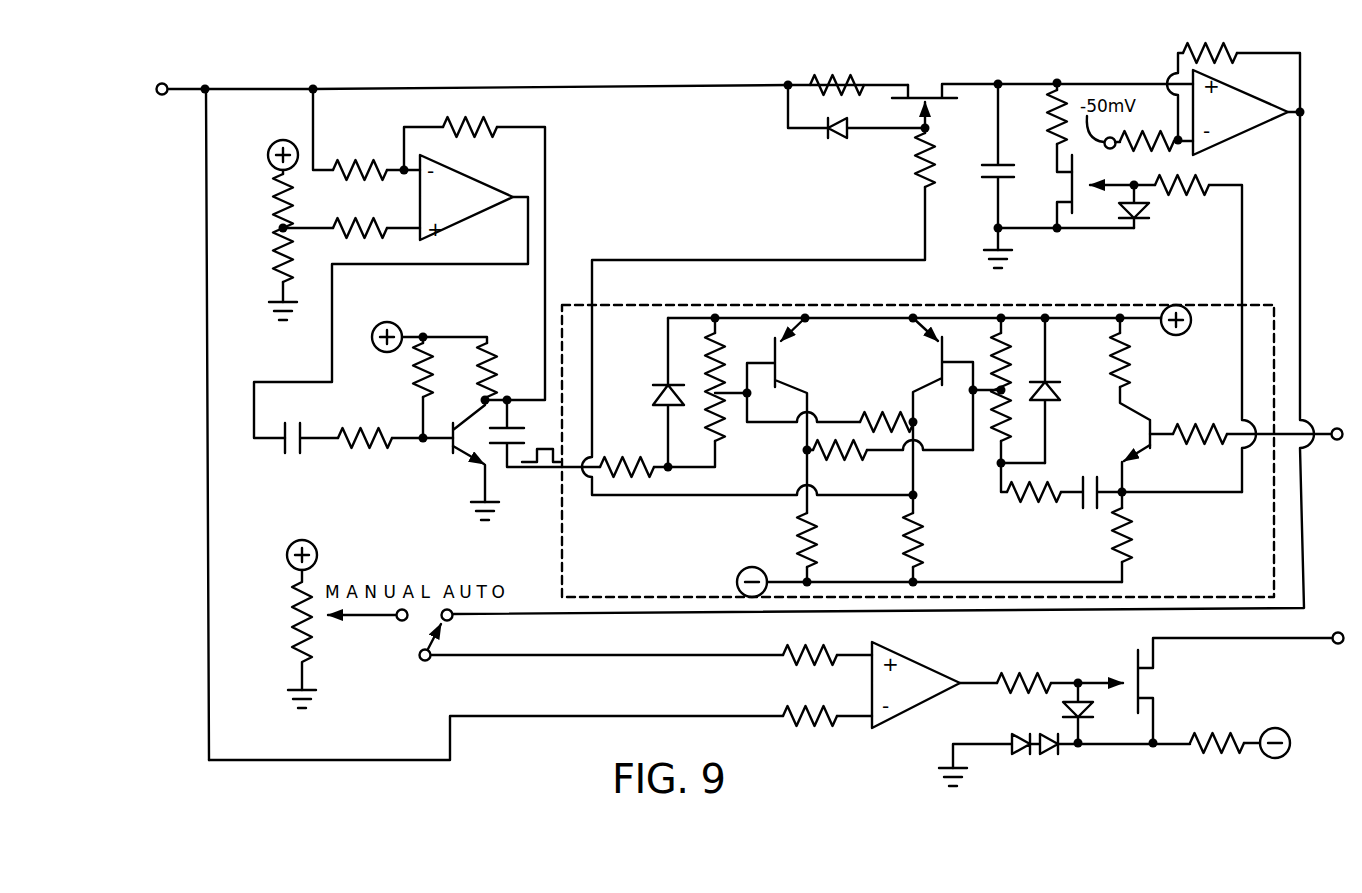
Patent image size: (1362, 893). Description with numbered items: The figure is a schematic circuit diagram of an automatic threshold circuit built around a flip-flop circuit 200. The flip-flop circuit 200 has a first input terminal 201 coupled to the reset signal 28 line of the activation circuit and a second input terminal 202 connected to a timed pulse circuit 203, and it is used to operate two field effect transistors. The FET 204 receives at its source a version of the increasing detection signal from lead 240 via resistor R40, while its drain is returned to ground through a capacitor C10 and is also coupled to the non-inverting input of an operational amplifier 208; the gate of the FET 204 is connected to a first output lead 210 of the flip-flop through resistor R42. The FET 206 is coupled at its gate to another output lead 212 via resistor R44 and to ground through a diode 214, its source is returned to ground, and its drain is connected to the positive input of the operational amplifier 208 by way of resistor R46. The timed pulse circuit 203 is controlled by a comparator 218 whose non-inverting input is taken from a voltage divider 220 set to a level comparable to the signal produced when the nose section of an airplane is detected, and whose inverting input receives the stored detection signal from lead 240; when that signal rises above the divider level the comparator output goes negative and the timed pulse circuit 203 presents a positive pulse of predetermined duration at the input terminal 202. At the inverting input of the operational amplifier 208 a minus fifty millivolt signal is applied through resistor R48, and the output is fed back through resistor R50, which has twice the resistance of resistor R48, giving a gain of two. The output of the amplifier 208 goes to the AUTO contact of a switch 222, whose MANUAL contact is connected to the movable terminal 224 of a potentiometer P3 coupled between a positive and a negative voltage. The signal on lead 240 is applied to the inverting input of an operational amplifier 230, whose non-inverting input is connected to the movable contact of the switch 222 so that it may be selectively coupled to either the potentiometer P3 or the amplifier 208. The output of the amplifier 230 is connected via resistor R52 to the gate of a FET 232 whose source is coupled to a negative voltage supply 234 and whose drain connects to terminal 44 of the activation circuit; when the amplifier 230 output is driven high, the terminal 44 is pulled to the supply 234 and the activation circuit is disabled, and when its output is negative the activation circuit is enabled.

The lead 240 is at (178, 89).
The voltage divider 220 is at (254, 219).
The comparator 218 is at (455, 170).
The timed pulse circuit 203 is at (371, 464).
The second input terminal 202 is at (553, 470).
The flip-flop circuit 200 is at (560, 554).
The first output lead 210 is at (592, 285).
The output lead 212 is at (1240, 285).
The first input terminal 201 is at (1290, 432).
The reset signal 28 is at (1322, 400).
The resistor R40 is at (820, 78).
The FET 204 is at (933, 100).
The resistor R42 is at (920, 180).
The capacitor C10 is at (985, 168).
The resistor R46 is at (1047, 135).
The FET 206 is at (1057, 185).
The resistor R50 is at (1207, 47).
The resistor R48 is at (1153, 152).
The operational amplifier 208 is at (1230, 137).
The resistor R44 is at (1163, 193).
The diode 214 is at (1140, 208).
The potentiometer P3 is at (295, 630).
The movable terminal 224 is at (328, 617).
The switch 222 is at (443, 674).
The operational amplifier 230 is at (903, 655).
The resistor R52 is at (1030, 673).
The FET 232 is at (1137, 656).
The terminal 44 is at (1333, 645).
The negative voltage supply 234 is at (1172, 762).